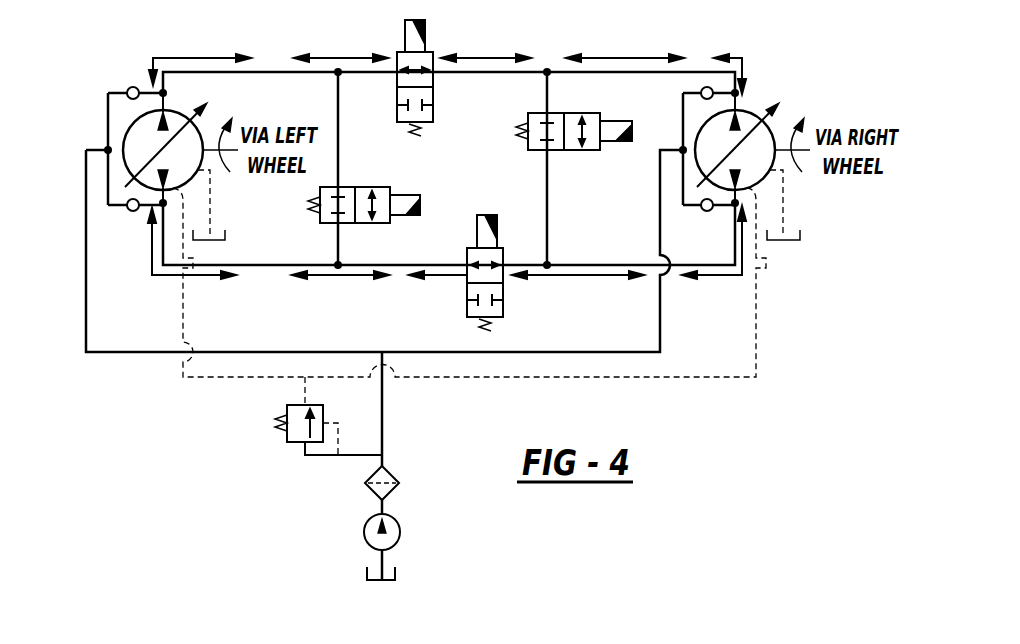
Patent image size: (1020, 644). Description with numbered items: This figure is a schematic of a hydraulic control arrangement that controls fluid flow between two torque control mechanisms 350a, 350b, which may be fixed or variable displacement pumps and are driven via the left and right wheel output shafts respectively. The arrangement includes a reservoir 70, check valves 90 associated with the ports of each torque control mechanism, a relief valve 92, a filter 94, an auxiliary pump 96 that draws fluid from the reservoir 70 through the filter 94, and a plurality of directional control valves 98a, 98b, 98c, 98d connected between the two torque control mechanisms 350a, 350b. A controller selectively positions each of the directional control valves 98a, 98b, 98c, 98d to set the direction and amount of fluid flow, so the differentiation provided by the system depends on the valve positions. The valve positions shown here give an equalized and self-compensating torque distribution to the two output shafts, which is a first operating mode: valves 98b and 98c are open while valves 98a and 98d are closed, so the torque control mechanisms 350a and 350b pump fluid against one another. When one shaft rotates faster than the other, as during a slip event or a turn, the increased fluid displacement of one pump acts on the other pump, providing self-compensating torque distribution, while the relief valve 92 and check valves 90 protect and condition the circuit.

The reservoir 70 is at (367, 578).
The check valve 90 is at (130, 88).
The relief valve 92 is at (287, 433).
The filter 94 is at (393, 474).
The auxiliary pump 96 is at (400, 530).
The directional control valve 98a is at (360, 186).
The directional control valve 98b is at (434, 47).
The directional control valve 98c is at (503, 305).
The directional control valve 98d is at (538, 151).
The torque control mechanism 350a is at (132, 126).
The torque control mechanism 350b is at (752, 98).